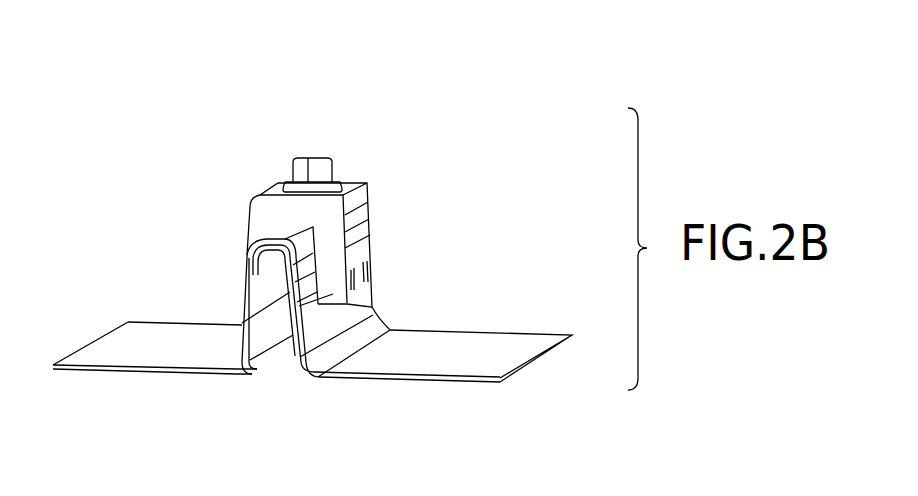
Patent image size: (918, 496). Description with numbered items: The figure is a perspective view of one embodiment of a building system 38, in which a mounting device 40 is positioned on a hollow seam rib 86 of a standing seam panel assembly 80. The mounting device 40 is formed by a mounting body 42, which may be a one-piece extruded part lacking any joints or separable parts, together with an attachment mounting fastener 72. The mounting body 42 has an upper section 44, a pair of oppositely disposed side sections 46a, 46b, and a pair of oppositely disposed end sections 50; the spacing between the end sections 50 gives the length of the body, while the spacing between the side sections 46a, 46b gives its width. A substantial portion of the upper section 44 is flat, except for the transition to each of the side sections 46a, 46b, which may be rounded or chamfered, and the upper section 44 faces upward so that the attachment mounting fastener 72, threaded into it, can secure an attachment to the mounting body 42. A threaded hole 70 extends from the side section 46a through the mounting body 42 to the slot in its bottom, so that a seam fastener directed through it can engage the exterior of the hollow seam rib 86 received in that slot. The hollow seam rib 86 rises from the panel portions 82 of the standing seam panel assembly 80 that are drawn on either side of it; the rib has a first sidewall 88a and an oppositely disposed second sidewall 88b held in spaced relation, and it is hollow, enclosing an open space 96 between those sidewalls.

The building system 38 is at (565, 135).
The mounting device 40 is at (398, 172).
The mounting body 42 is at (367, 188).
The upper section 44 is at (272, 192).
The side section 46a is at (247, 237).
The side section 46b is at (358, 240).
The end section 50 is at (312, 227).
The threaded hole 70 is at (370, 267).
The attachment mounting fastener 72 is at (317, 160).
The standing seam panel assembly 80 is at (520, 307).
The bracket wing 82 is at (127, 358).
The hollow seam rib 86 is at (241, 317).
The first sidewall 88a is at (242, 338).
The second sidewall 88b is at (357, 307).
The open space 96 is at (272, 362).